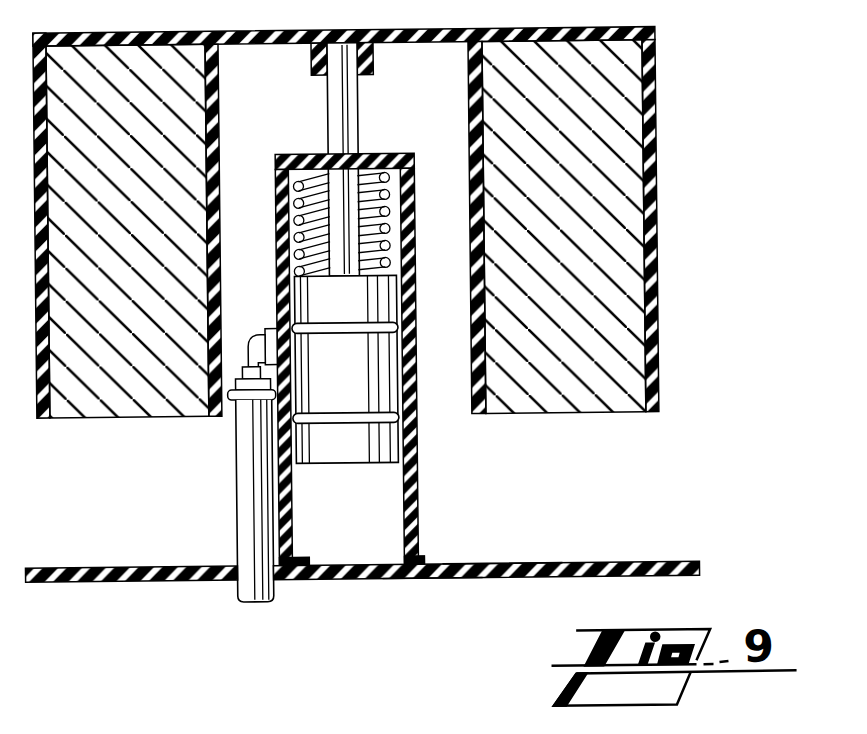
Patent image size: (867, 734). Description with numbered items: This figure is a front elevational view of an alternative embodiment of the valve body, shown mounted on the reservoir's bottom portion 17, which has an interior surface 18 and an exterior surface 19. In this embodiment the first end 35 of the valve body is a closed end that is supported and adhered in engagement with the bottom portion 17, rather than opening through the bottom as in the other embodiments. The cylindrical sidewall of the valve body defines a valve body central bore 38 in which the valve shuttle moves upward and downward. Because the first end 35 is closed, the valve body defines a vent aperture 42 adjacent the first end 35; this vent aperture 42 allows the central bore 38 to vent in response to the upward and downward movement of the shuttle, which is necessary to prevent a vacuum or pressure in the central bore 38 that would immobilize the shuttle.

The bottom portion 17 is at (561, 556).
The interior surface 18 is at (498, 562).
The exterior surface 19 is at (428, 578).
The first end 35 is at (420, 562).
The valve body central bore 38 is at (372, 492).
The vent aperture 42 is at (417, 532).